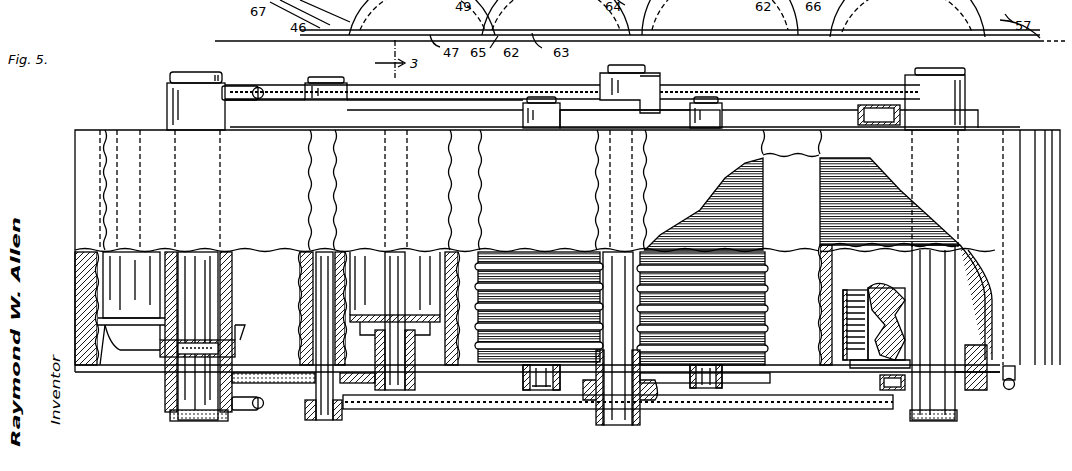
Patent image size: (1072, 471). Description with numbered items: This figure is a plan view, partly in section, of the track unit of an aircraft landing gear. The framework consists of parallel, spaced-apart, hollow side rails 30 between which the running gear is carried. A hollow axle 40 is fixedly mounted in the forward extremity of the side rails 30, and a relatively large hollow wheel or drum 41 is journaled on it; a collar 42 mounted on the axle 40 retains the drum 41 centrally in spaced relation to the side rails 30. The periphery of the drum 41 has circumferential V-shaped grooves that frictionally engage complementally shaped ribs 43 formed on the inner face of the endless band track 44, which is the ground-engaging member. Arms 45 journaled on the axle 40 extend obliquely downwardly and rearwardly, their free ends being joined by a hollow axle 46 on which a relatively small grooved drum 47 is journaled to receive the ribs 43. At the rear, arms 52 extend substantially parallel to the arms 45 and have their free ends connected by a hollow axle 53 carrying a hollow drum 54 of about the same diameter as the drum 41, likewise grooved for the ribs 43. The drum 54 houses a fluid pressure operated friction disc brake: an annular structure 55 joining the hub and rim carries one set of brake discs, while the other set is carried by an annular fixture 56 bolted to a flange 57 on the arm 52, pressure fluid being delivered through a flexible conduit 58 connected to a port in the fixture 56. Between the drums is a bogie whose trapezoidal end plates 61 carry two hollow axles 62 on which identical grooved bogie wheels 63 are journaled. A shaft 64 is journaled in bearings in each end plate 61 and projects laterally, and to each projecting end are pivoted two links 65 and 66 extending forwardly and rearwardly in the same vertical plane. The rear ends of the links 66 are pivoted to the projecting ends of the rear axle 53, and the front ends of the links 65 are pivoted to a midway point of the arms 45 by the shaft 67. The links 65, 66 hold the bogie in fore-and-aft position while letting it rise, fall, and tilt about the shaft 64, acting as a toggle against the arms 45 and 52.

The side rails 30 is at (238, 87).
The hollow axle 40 is at (192, 418).
The hollow wheel or drum 41 is at (118, 330).
The collar 42 is at (168, 356).
The ribs 43 is at (80, 270).
The endless band track 44 is at (131, 135).
The arms 45 is at (286, 105).
The hollow axle 46 is at (395, 395).
The hollow wheel or drum 47 is at (448, 356).
The arms 52 is at (885, 108).
The hollow axle 53 is at (942, 410).
The hollow wheel or drum 54 is at (826, 332).
The annular structure 55 is at (850, 290).
The annular fixture 56 is at (894, 291).
The flange 57 is at (980, 360).
The flexible conduit 58 is at (1009, 390).
The end plates 61 is at (665, 115).
The hollow axles 62 is at (542, 392).
The hollow wheels or drums 63 is at (502, 353).
The shaft 64 is at (620, 425).
The links 65 is at (480, 100).
The links 66 is at (783, 90).
The shaft 67 is at (326, 420).